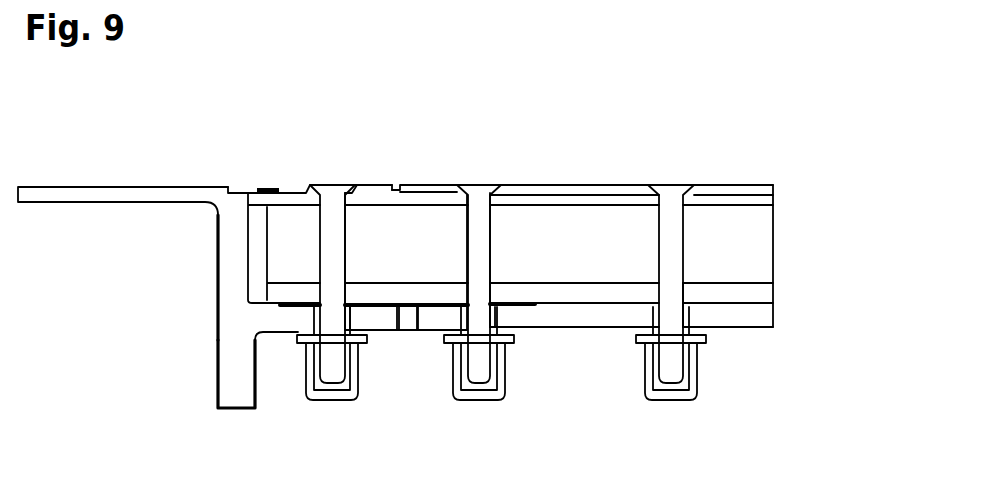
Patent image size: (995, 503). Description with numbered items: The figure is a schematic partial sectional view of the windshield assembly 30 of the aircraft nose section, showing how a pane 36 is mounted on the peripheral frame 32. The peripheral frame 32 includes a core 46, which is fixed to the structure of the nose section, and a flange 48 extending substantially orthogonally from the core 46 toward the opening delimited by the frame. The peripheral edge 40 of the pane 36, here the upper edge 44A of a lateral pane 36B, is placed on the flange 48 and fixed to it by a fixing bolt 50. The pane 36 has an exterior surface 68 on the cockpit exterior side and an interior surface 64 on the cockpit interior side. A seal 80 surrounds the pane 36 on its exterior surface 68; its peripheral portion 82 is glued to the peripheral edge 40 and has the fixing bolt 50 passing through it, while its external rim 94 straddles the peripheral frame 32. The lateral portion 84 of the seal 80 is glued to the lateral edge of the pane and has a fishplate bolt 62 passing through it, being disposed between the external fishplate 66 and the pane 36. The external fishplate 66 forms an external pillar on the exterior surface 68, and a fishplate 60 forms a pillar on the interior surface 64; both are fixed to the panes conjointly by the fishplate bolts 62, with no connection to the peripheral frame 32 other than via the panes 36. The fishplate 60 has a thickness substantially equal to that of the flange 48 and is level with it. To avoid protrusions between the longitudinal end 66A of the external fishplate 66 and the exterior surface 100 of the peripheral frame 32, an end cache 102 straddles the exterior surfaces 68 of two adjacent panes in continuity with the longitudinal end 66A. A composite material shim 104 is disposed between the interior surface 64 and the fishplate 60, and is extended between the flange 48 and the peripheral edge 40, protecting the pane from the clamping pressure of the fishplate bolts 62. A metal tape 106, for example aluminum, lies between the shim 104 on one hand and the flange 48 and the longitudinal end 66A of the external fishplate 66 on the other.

The exterior surface 100 is at (97, 186).
The external rim 94 is at (240, 186).
The peripheral portion 82 is at (298, 196).
The peripheral frame 32 is at (218, 302).
The core 46 is at (228, 376).
The windshield assembly 30 is at (152, 287).
The upper edge 44A is at (196, 249).
The peripheral edge 40 is at (290, 222).
The seal 80 is at (710, 240).
The lateral portion 84 is at (730, 197).
The end cache 102 is at (374, 188).
The longitudinal end 66A is at (425, 195).
The flange 48 is at (381, 318).
The tape 106 is at (403, 308).
The external fishplate 66 is at (613, 188).
The exterior surface 68 is at (543, 203).
The lateral pane 36B is at (684, 272).
The pane 36 is at (738, 222).
The interior surface 64 is at (748, 284).
The shim 104 is at (537, 294).
The fishplate 60 is at (589, 317).
The fixing bolt 50 is at (313, 380).
The fishplate bolt 62 is at (698, 378).